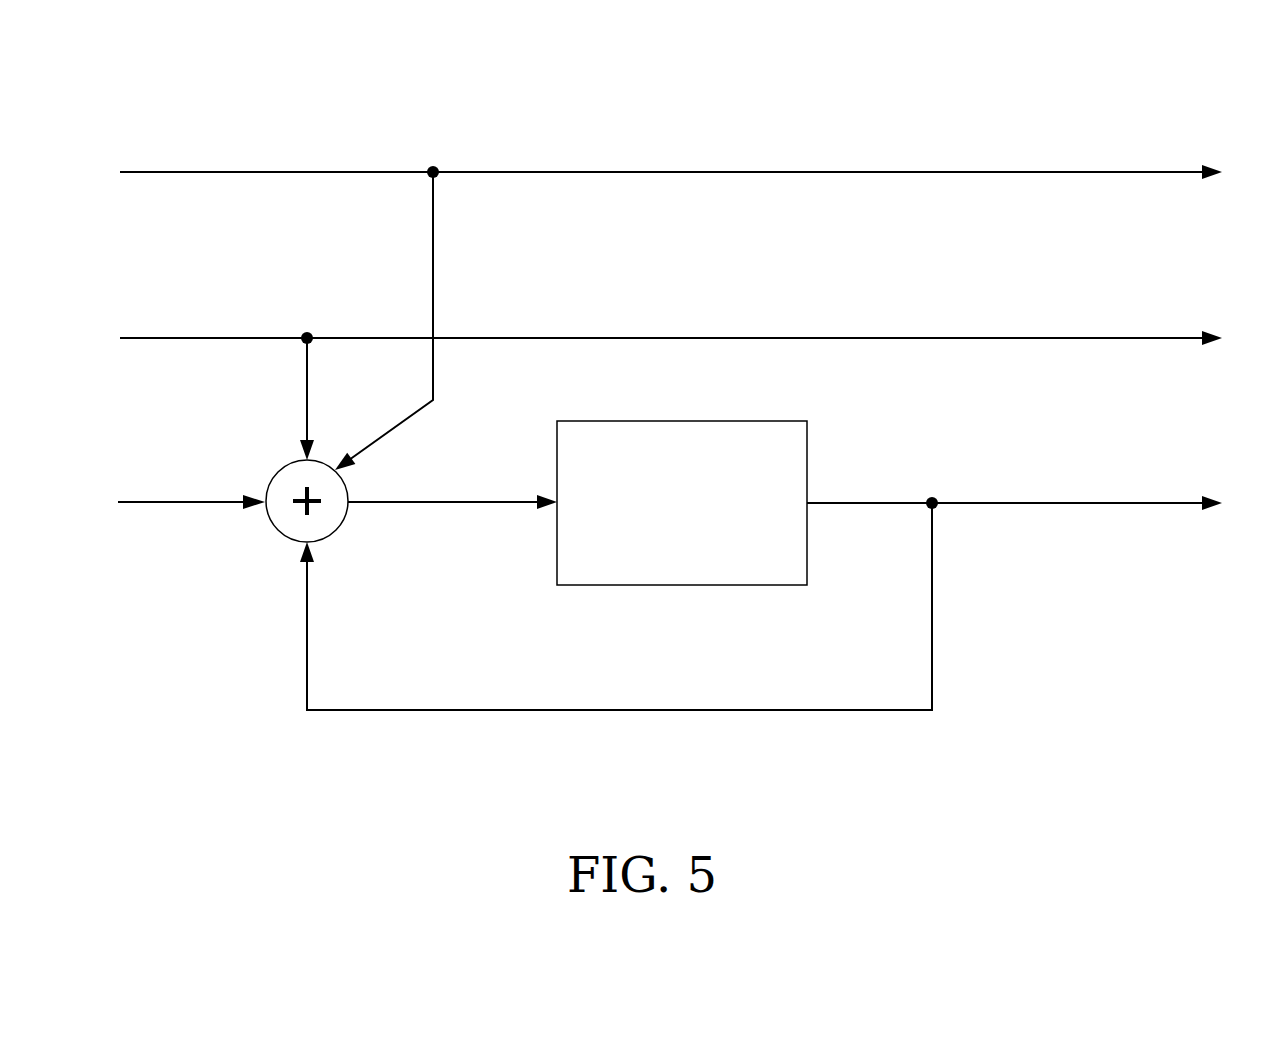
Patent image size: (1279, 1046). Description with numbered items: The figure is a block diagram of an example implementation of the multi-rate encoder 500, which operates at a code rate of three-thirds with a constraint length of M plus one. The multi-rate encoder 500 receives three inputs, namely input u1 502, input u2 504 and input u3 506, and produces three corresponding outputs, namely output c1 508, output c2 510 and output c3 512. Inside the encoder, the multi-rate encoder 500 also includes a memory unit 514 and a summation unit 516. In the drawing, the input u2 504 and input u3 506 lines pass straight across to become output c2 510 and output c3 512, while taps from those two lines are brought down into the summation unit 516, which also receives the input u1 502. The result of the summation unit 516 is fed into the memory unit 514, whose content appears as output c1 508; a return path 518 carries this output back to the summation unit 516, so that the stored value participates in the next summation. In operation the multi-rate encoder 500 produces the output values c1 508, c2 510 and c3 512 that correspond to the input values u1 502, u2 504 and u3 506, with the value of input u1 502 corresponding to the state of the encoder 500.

The multi-rate encoder 500 is at (622, 130).
The input u1 502 is at (203, 502).
The input u2 504 is at (225, 338).
The input u3 506 is at (223, 172).
The output c1 508 is at (1058, 503).
The output c2 510 is at (1017, 338).
The output c3 512 is at (1059, 173).
The memory unit 514 is at (682, 503).
The summation unit 516 is at (278, 533).
The feedback path 518 is at (763, 710).